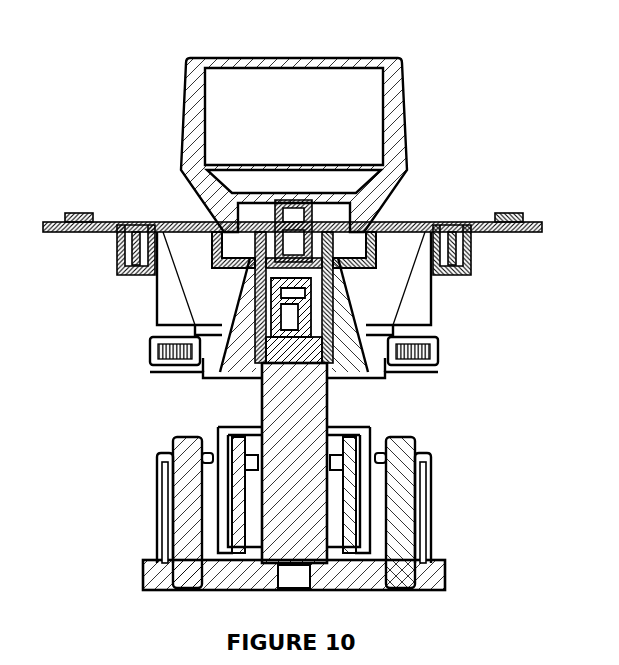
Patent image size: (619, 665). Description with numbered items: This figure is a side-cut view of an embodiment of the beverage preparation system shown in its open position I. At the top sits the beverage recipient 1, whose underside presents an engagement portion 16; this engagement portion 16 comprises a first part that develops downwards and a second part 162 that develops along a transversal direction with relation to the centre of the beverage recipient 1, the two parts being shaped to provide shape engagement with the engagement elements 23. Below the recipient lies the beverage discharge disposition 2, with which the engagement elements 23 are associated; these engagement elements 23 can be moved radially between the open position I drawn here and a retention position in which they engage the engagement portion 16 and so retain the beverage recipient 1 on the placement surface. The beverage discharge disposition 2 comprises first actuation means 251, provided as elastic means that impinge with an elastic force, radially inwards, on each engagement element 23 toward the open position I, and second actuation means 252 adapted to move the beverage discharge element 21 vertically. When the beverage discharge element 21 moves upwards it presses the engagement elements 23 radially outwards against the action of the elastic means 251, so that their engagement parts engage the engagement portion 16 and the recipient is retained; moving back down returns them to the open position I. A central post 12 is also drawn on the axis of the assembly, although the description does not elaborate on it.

The open position I is at (299, 315).
The beverage recipient 1 is at (283, 136).
The beverage discharge disposition 2 is at (292, 234).
The central post 12 is at (292, 218).
The engagement portion 16 is at (237, 241).
The second part 162 is at (351, 241).
The beverage discharge element 21 is at (298, 288).
The engagement element 23 is at (241, 288).
The first actuation means 251 is at (429, 350).
The second actuation means 252 is at (314, 482).